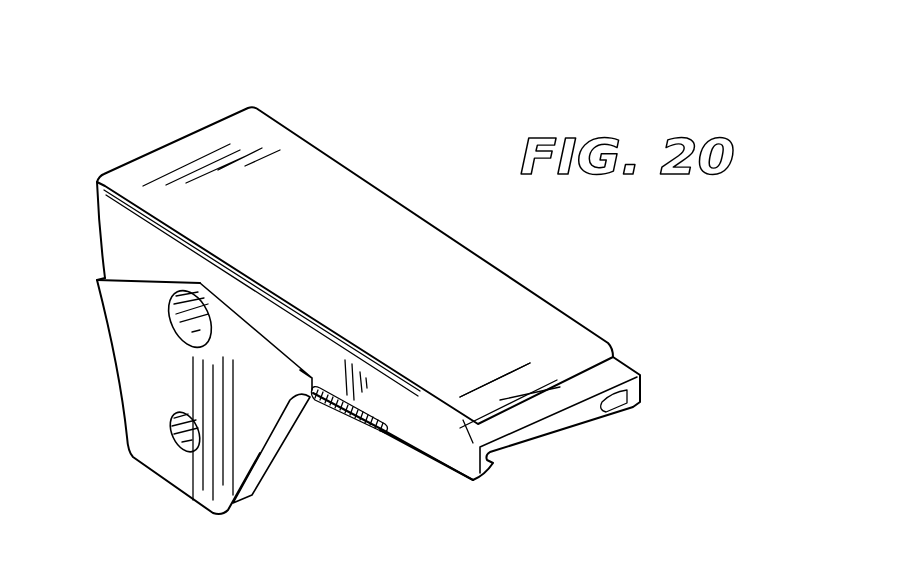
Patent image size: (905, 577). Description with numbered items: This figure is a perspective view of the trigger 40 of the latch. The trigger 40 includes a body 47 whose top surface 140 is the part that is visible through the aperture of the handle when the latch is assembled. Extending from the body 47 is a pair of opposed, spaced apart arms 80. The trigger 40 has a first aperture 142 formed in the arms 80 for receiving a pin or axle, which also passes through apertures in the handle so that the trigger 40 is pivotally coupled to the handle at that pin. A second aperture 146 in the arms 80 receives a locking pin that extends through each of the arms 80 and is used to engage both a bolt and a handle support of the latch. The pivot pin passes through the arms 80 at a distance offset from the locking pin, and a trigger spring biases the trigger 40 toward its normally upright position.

The trigger 40 is at (213, 88).
The body 47 is at (113, 215).
The opposed arms 80 is at (140, 362).
The top surface 140 is at (548, 337).
The first aperture 142 is at (173, 322).
The second aperture 146 is at (173, 433).